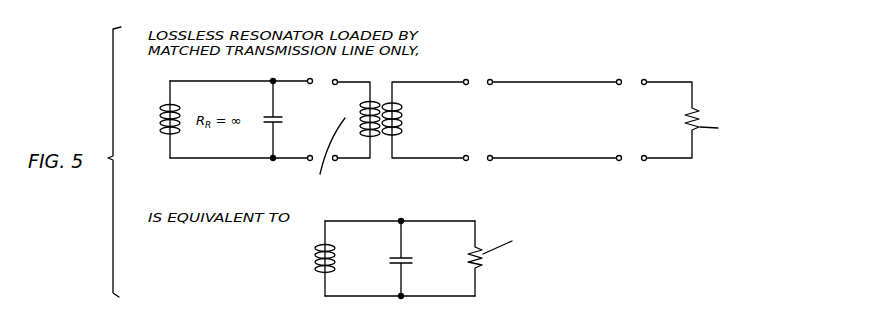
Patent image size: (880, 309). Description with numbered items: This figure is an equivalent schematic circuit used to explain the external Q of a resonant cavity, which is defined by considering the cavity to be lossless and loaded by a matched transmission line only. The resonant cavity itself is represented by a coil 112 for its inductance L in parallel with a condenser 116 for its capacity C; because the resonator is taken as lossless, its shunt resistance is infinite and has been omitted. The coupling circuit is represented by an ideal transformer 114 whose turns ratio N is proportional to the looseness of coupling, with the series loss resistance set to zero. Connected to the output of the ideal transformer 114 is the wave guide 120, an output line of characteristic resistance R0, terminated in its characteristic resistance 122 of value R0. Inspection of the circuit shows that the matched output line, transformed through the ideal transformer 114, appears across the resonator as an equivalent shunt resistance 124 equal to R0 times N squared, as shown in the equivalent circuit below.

The coil 112 is at (160, 109).
The ideal transformer 114 is at (381, 88).
The condenser 116 is at (262, 122).
The wave guide 120 is at (543, 82).
The characteristic resistance 122 is at (700, 113).
The equivalent resistor R0 N^2 124 is at (483, 263).